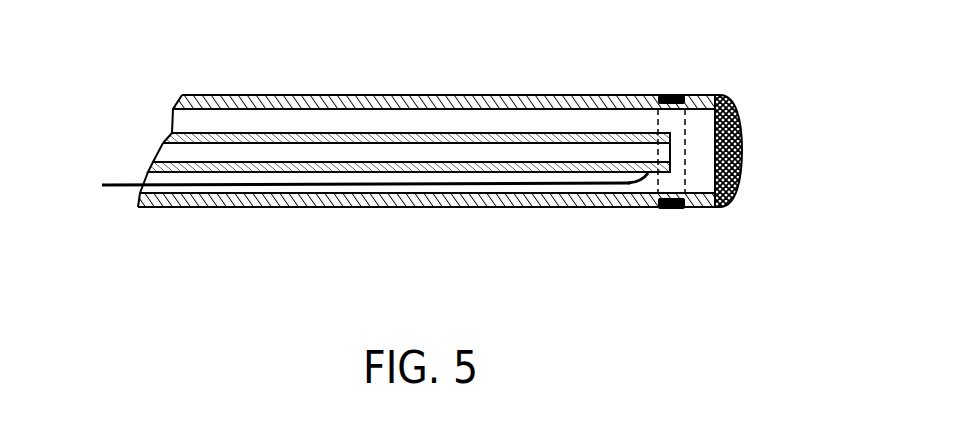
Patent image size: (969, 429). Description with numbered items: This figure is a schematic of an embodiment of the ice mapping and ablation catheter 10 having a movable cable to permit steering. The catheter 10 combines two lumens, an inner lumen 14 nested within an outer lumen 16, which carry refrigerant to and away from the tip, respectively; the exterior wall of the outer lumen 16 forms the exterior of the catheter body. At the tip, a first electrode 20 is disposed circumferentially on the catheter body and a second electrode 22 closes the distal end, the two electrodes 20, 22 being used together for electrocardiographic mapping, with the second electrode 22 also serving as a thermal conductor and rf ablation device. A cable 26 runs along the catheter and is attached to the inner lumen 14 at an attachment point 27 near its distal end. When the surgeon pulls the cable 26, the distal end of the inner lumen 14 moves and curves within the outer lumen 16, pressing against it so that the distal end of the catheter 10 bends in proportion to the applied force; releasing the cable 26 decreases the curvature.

The ice mapping and ablation catheter 10 is at (470, 235).
The inner lumen 14 is at (394, 153).
The outer lumen 16 is at (523, 125).
The first electrode 20 is at (672, 93).
The second electrode 22 is at (742, 147).
The cable 26 is at (115, 188).
The attachment point 27 is at (649, 173).